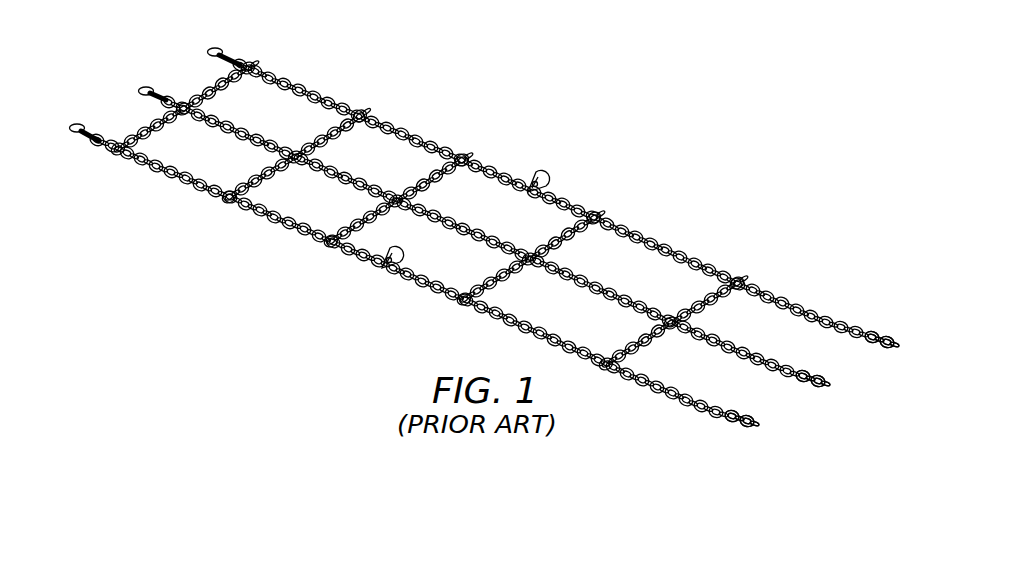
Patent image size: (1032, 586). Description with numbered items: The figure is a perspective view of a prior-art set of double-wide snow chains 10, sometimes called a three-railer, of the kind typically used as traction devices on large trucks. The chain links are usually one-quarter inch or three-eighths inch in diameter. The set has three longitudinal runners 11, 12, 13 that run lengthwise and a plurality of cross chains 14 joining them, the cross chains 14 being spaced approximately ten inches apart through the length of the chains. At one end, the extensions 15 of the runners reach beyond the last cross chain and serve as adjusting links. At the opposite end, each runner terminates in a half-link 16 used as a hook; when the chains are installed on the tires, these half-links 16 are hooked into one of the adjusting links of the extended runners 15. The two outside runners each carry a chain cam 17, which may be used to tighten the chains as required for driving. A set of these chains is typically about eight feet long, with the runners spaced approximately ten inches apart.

The double-wide snow chains 10 is at (494, 221).
The longitudinal runner 11 is at (492, 320).
The longitudinal runner 12 is at (601, 289).
The longitudinal runner 13 is at (699, 255).
The cross chains 14 is at (238, 98).
The extensions 15 is at (892, 339).
The half-links 16 is at (206, 50).
The chain cam 17 is at (540, 170).